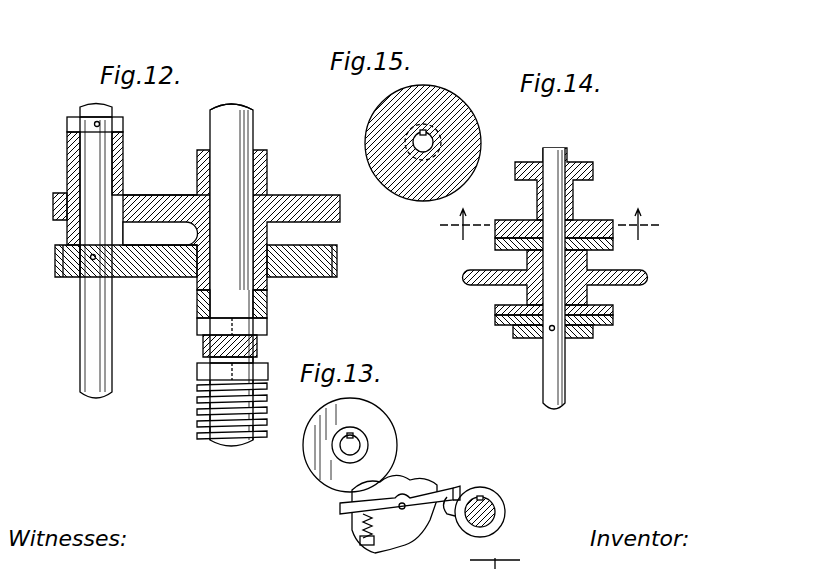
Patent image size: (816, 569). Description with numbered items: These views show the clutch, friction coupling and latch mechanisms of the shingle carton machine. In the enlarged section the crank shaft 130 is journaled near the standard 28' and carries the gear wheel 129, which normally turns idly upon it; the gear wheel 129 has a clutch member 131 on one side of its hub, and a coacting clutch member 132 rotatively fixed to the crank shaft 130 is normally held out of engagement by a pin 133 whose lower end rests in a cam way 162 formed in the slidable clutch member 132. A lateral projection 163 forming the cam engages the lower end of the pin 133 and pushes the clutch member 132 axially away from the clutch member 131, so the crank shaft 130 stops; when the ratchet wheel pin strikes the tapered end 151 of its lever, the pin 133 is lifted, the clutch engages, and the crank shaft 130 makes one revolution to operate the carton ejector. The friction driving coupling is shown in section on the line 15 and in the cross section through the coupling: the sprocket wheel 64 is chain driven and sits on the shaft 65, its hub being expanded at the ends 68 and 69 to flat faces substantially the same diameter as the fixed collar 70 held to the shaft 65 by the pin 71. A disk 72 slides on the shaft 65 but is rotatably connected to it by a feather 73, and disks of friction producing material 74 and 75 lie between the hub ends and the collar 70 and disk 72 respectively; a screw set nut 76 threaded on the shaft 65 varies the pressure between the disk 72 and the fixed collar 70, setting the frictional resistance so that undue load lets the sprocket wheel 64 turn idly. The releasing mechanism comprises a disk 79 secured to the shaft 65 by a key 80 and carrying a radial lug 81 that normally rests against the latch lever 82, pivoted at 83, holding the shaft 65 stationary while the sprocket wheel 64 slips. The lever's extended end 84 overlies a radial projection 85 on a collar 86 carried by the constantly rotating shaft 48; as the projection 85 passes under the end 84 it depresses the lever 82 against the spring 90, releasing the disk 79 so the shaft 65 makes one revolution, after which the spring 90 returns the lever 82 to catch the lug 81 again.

In FIG. 12, the crank shaft 130 is at (253, 145).
In FIG. 12, the standard 28' is at (238, 220).
In FIG. 12, the gear wheel 129 is at (338, 270).
In FIG. 12, the clutch member 131 is at (198, 290).
In FIG. 12, the clutch member 132 is at (198, 325).
In FIG. 12, the pin 133 is at (258, 345).
In FIG. 12, the lateral projection 163 is at (265, 356).
In FIG. 12, the cam way 162 is at (198, 363).
In FIG. 12, the tapered end 151 is at (205, 405).
In FIG. 15, the disk 72 is at (482, 138).
In FIG. 14, the disk 72 is at (578, 215).
In FIG. 15, the feather 73 is at (460, 118).
In FIG. 14, the feather 73 is at (573, 215).
In FIG. 14, the screw set nut 76 is at (578, 172).
In FIG. 14, the section line 15 is at (554, 224).
In FIG. 14, the friction disk 75 is at (613, 252).
In FIG. 14, the sprocket wheel 64 is at (640, 266).
In FIG. 14, the hub end 68 is at (498, 240).
In FIG. 14, the hub end 69 is at (615, 308).
In FIG. 14, the friction disk 74 is at (614, 318).
In FIG. 14, the fixed collar 70 is at (530, 338).
In FIG. 14, the pin 71 is at (551, 332).
In FIG. 14, the shaft 65 is at (568, 382).
In FIG. 13, the shaft 65 is at (360, 444).
In FIG. 13, the disk 79 is at (396, 450).
In FIG. 13, the key 80 is at (352, 440).
In FIG. 13, the radial lug 81 is at (394, 510).
In FIG. 13, the latch lever 82 is at (342, 508).
In FIG. 13, the pivot 83 is at (406, 503).
In FIG. 13, the extended end 84 is at (456, 489).
In FIG. 13, the radial projection 85 is at (452, 515).
In FIG. 13, the collar 86 is at (490, 492).
In FIG. 13, the shaft 48 is at (497, 510).
In FIG. 13, the spring 90 is at (362, 536).